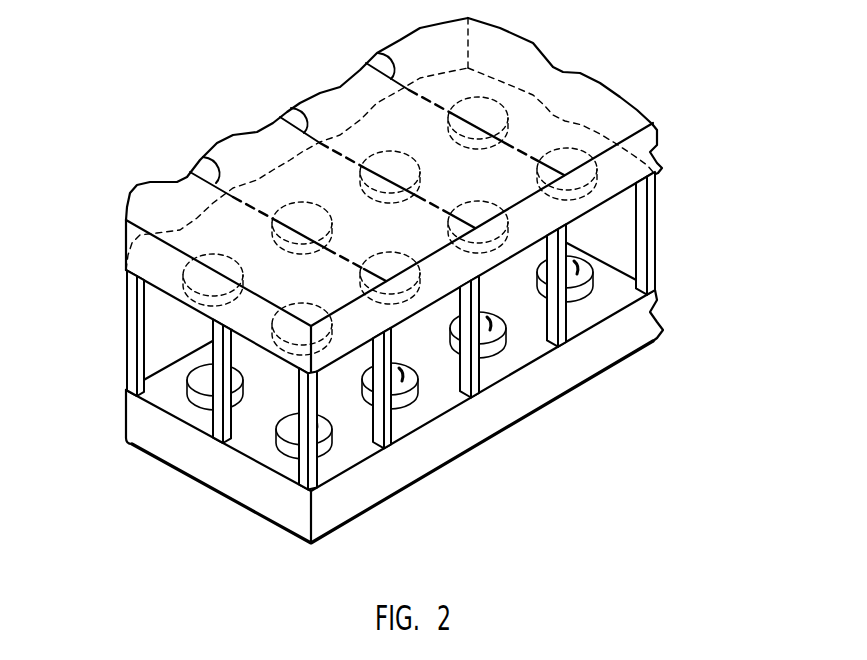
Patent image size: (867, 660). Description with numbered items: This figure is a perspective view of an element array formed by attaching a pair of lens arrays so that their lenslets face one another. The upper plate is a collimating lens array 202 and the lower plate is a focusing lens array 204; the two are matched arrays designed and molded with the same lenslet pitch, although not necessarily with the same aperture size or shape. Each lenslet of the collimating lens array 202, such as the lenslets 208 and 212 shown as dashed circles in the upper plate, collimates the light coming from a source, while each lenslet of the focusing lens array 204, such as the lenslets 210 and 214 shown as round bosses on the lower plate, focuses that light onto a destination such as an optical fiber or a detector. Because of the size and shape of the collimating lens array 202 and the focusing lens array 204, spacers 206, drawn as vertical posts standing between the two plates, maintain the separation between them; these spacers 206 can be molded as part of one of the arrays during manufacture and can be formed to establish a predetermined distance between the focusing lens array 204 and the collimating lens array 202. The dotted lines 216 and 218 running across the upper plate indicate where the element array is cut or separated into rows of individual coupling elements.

The collimating lens array 202 is at (660, 153).
The focusing lens array 204 is at (523, 393).
The spacers 206 is at (127, 366).
The lenslet 208 is at (225, 233).
The lenslet 210 is at (187, 392).
The lenslet 212 is at (307, 283).
The lenslet 214 is at (280, 455).
The dotted line 216 is at (203, 159).
The dotted line 218 is at (291, 110).